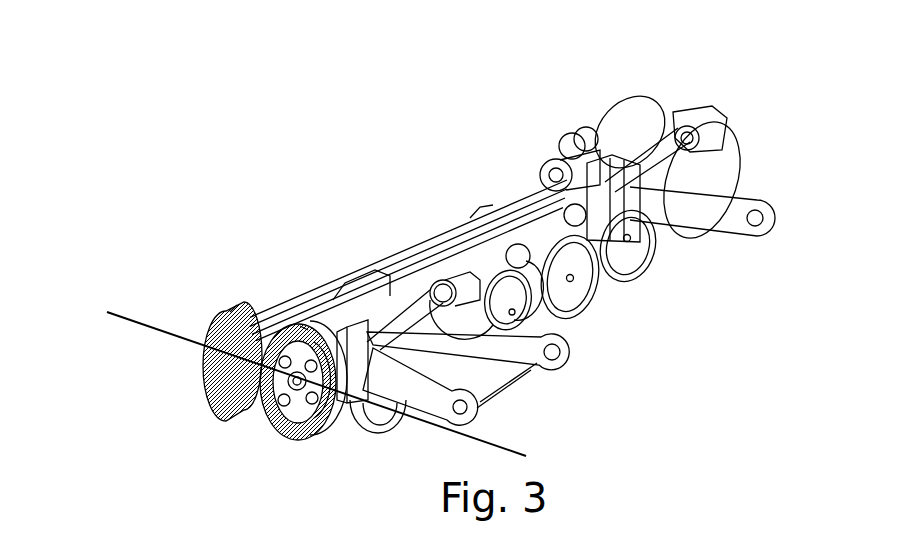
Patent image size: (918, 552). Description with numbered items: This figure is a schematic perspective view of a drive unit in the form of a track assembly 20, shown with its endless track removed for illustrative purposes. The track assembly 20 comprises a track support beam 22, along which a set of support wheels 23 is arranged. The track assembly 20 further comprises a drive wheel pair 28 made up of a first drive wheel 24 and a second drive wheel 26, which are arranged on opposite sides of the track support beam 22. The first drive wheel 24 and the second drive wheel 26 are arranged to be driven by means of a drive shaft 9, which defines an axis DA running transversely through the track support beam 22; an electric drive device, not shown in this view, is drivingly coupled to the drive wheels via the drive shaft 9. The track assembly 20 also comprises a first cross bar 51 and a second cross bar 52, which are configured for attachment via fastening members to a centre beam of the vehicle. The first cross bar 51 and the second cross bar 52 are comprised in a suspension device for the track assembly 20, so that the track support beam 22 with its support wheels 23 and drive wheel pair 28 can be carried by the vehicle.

The track assembly 20 is at (439, 158).
The track support beam 22 is at (430, 238).
The support wheels 23 is at (627, 283).
The first drive wheel 24 is at (220, 412).
The second drive wheel 26 is at (297, 430).
The drive wheel pair 28 is at (302, 325).
The drive shaft 9 is at (296, 428).
The first cross bar 51 is at (717, 220).
The second cross bar 52 is at (577, 340).
The axis DA is at (490, 442).